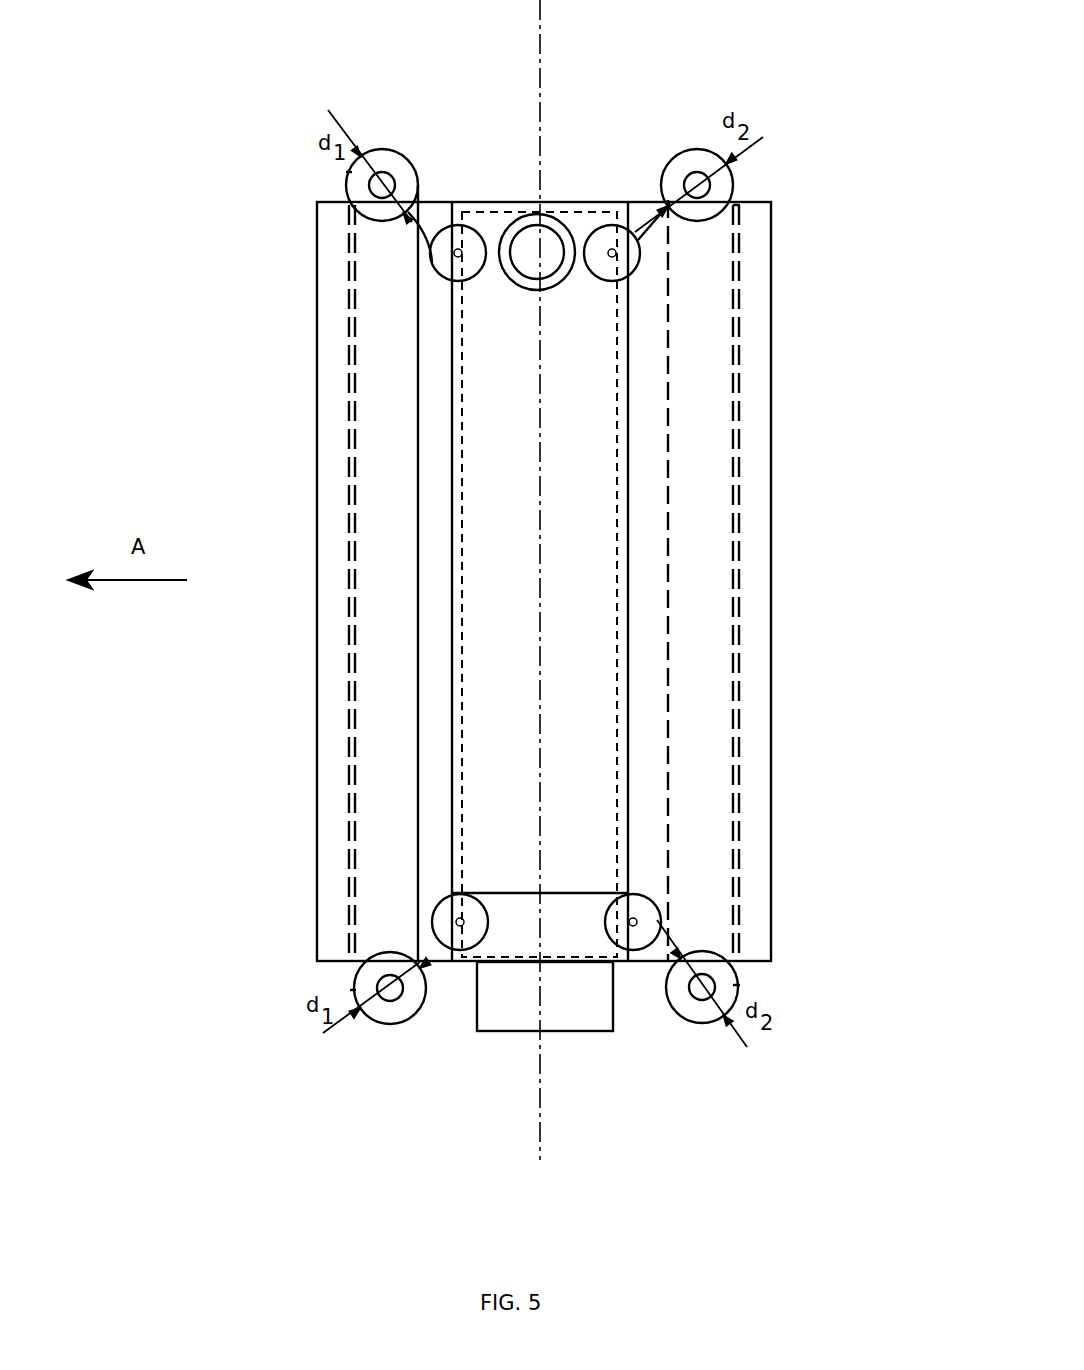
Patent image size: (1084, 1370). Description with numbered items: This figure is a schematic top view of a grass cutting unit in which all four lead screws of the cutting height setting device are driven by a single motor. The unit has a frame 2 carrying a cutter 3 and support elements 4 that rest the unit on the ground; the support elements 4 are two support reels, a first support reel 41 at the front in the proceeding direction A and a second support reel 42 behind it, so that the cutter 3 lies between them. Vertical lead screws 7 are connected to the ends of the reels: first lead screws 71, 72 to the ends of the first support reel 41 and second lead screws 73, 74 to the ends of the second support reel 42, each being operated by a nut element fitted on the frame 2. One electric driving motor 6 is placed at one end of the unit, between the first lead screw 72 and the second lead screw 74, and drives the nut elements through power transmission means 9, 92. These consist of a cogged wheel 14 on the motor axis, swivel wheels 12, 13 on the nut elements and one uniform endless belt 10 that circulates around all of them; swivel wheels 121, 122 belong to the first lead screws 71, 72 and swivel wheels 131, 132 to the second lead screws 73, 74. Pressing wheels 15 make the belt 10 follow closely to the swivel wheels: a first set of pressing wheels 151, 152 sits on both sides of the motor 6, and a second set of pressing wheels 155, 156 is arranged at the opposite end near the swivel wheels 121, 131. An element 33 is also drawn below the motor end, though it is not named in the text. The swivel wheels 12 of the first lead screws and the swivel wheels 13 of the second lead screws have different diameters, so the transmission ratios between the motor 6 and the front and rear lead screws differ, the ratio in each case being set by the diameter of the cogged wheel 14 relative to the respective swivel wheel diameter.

The frame 2 is at (317, 388).
The cutter 3 is at (598, 205).
The support elements 4 is at (561, 582).
The first support reel 41 is at (350, 681).
The second support reel 42 is at (695, 782).
The driving motor 6 is at (548, 277).
The lead screws 7 is at (541, 578).
The first lead screw 71 is at (397, 1000).
The first lead screw 72 is at (390, 152).
The second lead screw 73 is at (680, 1019).
The second lead screw 74 is at (688, 165).
The power transmission means 9 is at (447, 187).
The power transmission means 92 is at (758, 904).
The belt 10 is at (457, 236).
The swivel wheels 12 is at (278, 564).
The swivel wheel 121 is at (355, 990).
The swivel wheel 122 is at (352, 172).
The swivel wheels 13 is at (819, 573).
The swivel wheel 131 is at (738, 985).
The swivel wheel 132 is at (740, 205).
The cogged wheel 14 is at (498, 225).
The pressing wheels 15 is at (541, 587).
The pressing wheel 151 is at (450, 283).
The pressing wheel 152 is at (604, 280).
The pressing wheel 155 is at (447, 913).
The fourth roller 156 is at (652, 895).
The drive block 33 is at (588, 1032).